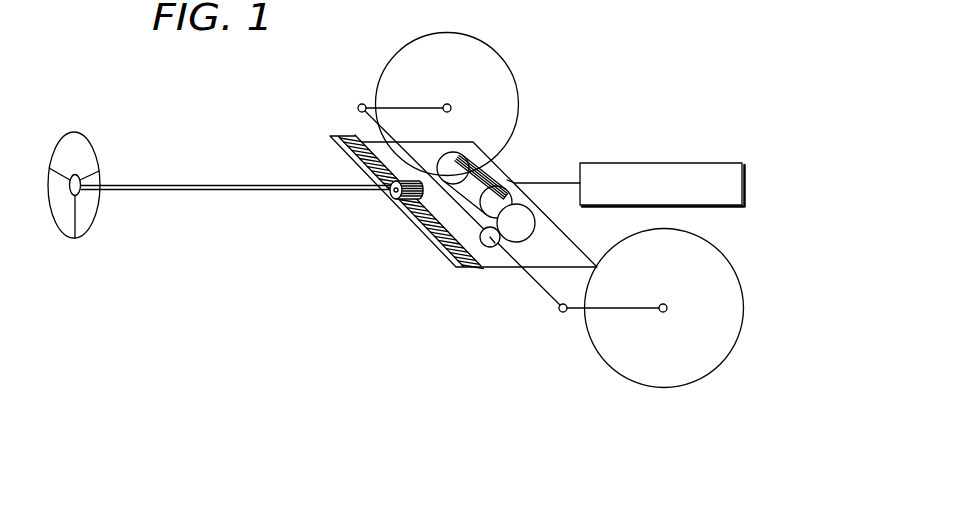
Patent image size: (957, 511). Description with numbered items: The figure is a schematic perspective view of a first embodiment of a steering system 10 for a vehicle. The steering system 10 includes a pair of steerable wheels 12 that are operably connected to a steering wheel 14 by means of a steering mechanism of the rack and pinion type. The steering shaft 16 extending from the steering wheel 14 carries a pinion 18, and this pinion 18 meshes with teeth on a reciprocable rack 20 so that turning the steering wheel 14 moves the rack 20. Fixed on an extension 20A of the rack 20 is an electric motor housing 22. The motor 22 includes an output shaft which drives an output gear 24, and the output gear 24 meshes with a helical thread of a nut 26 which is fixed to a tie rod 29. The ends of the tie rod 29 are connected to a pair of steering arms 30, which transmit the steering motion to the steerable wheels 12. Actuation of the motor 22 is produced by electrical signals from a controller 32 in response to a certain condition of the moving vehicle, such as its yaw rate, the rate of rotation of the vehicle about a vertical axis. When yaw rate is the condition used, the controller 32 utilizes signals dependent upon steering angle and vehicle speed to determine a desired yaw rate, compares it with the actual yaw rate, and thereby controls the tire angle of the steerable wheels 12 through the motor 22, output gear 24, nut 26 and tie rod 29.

The steering system 10 is at (310, 116).
The steerable wheels 12 is at (508, 68).
The steering wheel 14 is at (93, 143).
The steering shaft 16 is at (200, 185).
The pinion 18 is at (395, 206).
The rack 20 is at (432, 233).
The extension of the rack 20A is at (506, 170).
The electric motor housing 22 is at (478, 152).
The output gear 24 is at (536, 224).
The nut 26 is at (491, 248).
The tie rod 29 is at (540, 286).
The steering arms 30 is at (370, 105).
The controller 32 is at (742, 184).